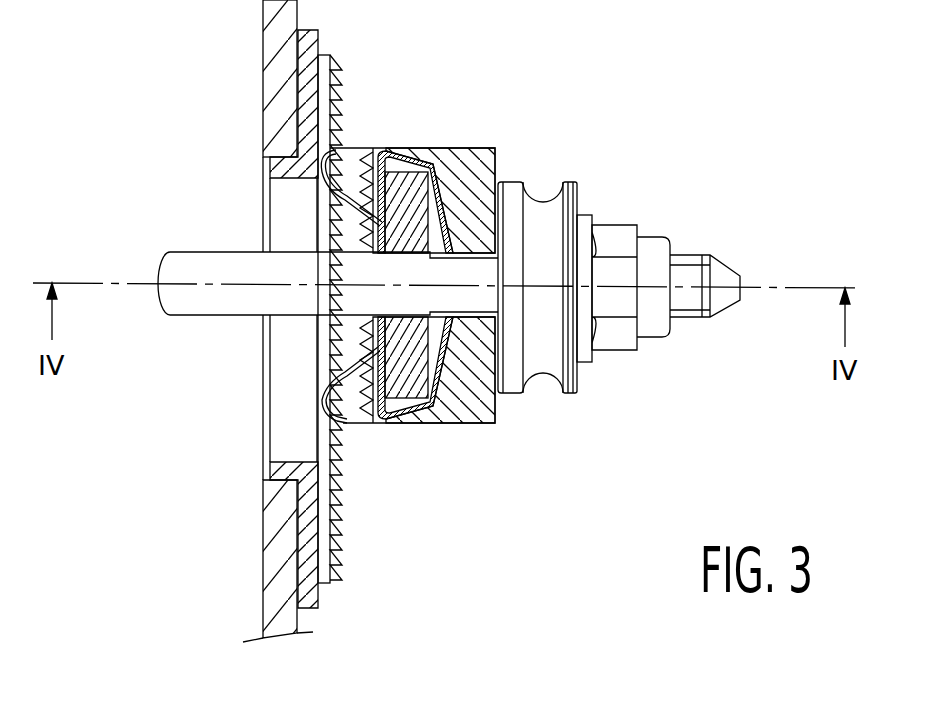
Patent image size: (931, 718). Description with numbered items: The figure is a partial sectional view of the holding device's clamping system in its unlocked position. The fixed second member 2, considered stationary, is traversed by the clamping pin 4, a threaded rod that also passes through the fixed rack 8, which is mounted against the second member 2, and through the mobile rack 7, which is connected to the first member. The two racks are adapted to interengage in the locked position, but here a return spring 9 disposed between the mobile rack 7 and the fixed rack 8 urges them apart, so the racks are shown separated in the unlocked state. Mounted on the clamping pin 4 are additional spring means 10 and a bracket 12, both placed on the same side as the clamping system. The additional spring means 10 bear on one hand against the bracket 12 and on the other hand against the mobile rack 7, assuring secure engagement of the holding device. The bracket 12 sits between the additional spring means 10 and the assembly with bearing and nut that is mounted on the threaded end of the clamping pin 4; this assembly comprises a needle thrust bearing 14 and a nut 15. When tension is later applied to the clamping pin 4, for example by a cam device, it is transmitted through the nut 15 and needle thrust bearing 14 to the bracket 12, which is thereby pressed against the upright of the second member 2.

The second member 2 is at (277, 62).
The clamping pin 4 is at (228, 268).
The mobile rack 7 is at (408, 170).
The fixed rack 8 is at (313, 97).
The return spring 9 is at (323, 378).
The additional spring means 10 is at (458, 178).
The bracket 12 is at (473, 405).
The needle thrust bearing 14 is at (547, 217).
The nut 15 is at (655, 250).